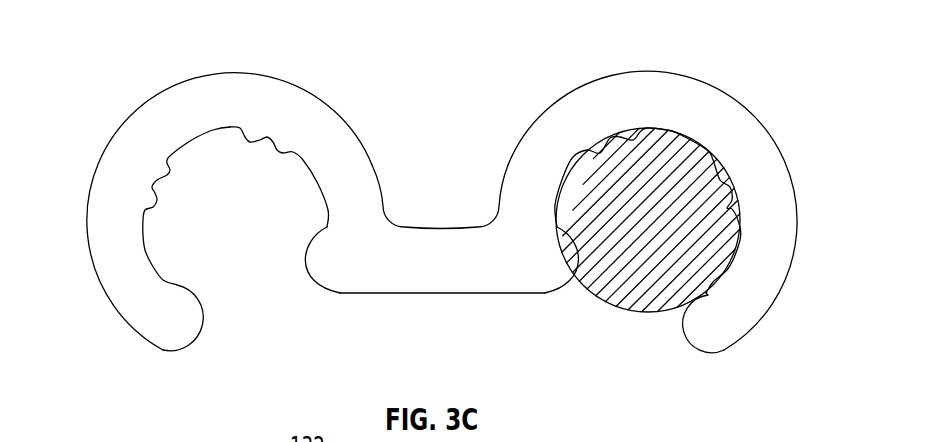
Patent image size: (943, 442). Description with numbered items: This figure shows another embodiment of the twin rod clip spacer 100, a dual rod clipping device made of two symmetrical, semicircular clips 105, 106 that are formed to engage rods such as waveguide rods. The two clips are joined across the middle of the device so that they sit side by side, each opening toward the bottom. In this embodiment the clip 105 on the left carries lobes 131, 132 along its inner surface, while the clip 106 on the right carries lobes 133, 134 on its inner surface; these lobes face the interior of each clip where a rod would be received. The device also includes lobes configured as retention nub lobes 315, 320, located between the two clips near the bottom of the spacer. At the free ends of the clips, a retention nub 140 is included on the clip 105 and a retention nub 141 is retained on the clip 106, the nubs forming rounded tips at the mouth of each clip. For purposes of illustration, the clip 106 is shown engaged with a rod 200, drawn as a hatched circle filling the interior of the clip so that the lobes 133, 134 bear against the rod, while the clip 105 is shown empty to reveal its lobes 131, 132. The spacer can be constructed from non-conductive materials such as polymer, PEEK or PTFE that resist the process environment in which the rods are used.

The twin rod clip spacer 100 is at (767, 27).
The clip 105 is at (102, 63).
The clip 106 is at (774, 110).
The lobe 131 is at (148, 204).
The lobe 132 is at (257, 133).
The lobe 133 is at (613, 130).
The lobe 134 is at (737, 197).
The retention nub 140 is at (177, 322).
The retention nub 141 is at (708, 318).
The rod 200 is at (637, 280).
The retention nub lobe 315 is at (323, 270).
The retention nub lobe 320 is at (550, 277).